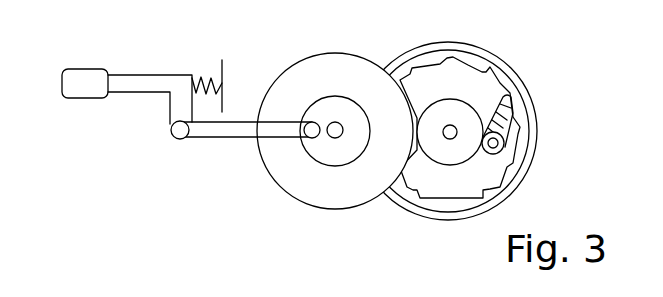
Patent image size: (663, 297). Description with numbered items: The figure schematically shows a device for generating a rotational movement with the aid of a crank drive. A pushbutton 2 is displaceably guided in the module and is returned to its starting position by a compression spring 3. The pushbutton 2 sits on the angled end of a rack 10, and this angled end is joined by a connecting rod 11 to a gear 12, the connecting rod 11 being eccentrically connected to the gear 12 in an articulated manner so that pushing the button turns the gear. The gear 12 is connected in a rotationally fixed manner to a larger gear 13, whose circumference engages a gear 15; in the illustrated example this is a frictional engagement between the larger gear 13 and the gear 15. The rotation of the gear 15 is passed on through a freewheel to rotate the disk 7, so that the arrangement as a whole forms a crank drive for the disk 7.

The pushbutton 2 is at (83, 92).
The compression spring 3 is at (213, 72).
The disk 7 is at (495, 56).
The rack 10 is at (152, 87).
The connecting rod 11 is at (222, 132).
The gear 12 is at (332, 142).
The larger gear 13 is at (365, 183).
The gear 15 is at (450, 152).